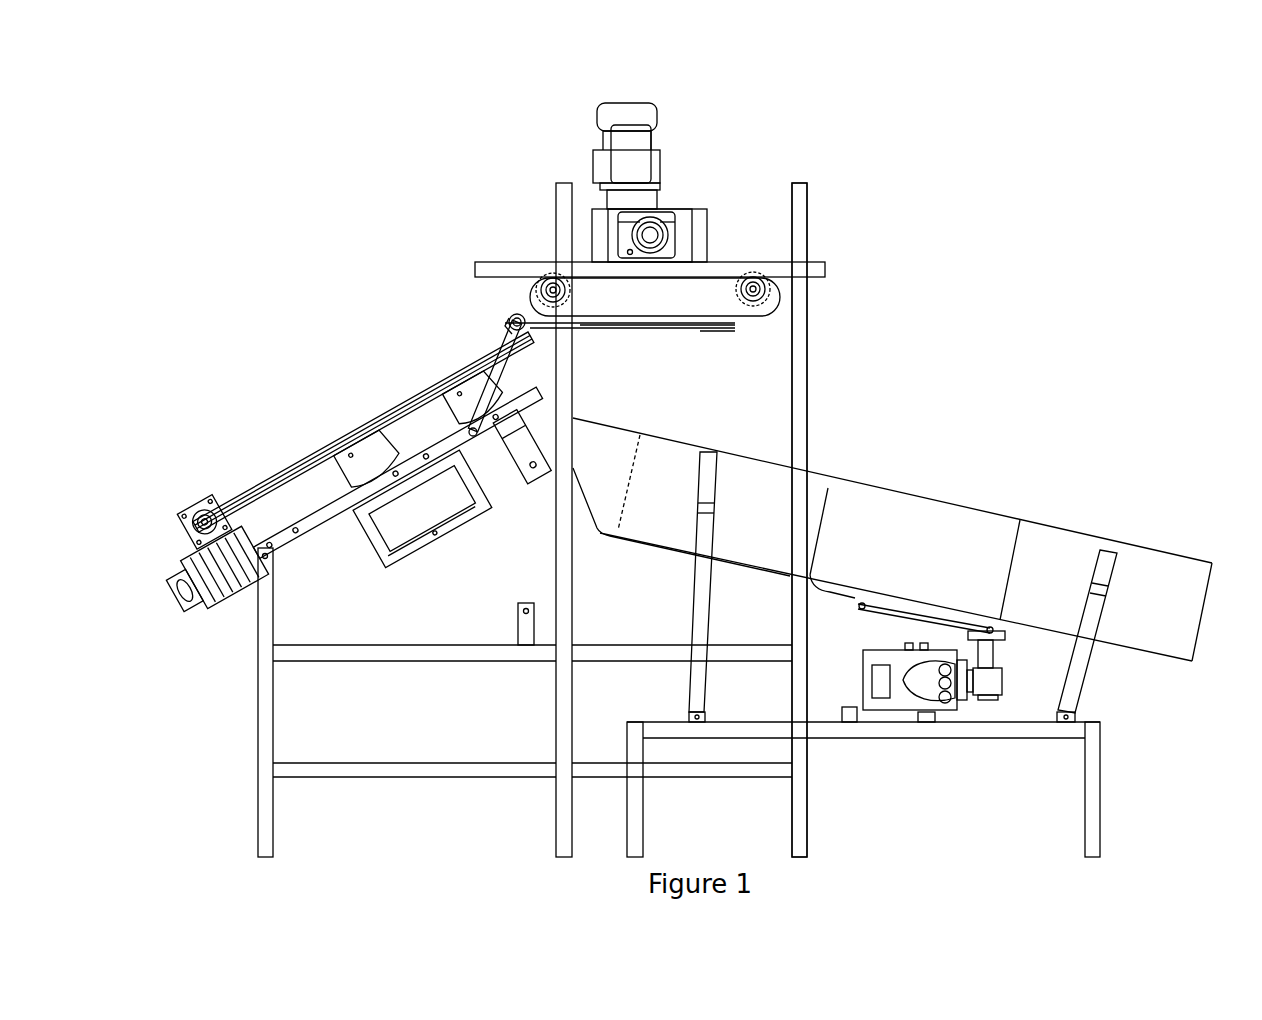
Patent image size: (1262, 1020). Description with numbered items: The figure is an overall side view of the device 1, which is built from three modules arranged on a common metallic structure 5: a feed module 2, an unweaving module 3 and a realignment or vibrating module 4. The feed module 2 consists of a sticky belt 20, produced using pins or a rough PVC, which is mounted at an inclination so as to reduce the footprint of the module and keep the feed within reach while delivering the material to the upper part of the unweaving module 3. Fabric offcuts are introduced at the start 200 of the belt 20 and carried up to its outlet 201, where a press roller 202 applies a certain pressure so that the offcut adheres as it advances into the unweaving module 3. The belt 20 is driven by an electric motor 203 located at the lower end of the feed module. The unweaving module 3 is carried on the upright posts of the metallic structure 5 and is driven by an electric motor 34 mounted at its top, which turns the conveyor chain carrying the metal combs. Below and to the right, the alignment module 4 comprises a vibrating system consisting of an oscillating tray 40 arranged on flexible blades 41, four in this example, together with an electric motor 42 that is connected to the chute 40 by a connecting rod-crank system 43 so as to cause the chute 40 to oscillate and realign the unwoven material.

The device 1 is at (1003, 266).
The feed module 2 is at (318, 448).
The unweaving module 3 is at (679, 452).
The realignment module or vibrating module 4 is at (895, 632).
The metallic structure 5 is at (800, 230).
The sticky belt 20 is at (247, 500).
The electric motor 34 is at (625, 125).
The oscillating tray 40 is at (896, 520).
The flexible blades 41 is at (1077, 688).
The electric motor 42 is at (902, 698).
The connecting rod-crank system 43 is at (975, 627).
The start of the belt 200 is at (200, 511).
The outlet of the belt 201 is at (520, 318).
The press roller 202 is at (508, 320).
The electric motor 203 is at (230, 605).